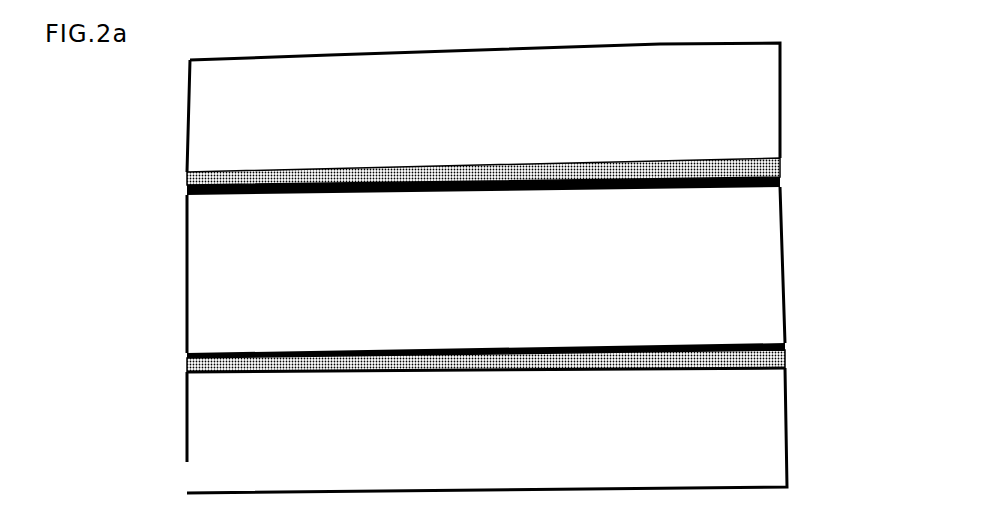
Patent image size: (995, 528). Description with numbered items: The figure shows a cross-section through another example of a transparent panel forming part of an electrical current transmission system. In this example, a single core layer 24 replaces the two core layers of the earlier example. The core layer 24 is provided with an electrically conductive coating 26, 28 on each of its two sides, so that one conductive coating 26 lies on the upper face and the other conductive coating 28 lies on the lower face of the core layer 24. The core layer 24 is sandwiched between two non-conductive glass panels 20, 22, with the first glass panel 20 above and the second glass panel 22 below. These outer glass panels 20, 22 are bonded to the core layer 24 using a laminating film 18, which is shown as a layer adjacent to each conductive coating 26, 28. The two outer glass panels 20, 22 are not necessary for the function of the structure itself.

The non-conductive glass panel 20 is at (745, 100).
The laminating film 18 is at (760, 172).
The electrically conductive coating 26 is at (780, 182).
The core layer 24 is at (738, 262).
The electrically conductive coating 28 is at (780, 345).
The non-conductive glass panel 22 is at (748, 440).